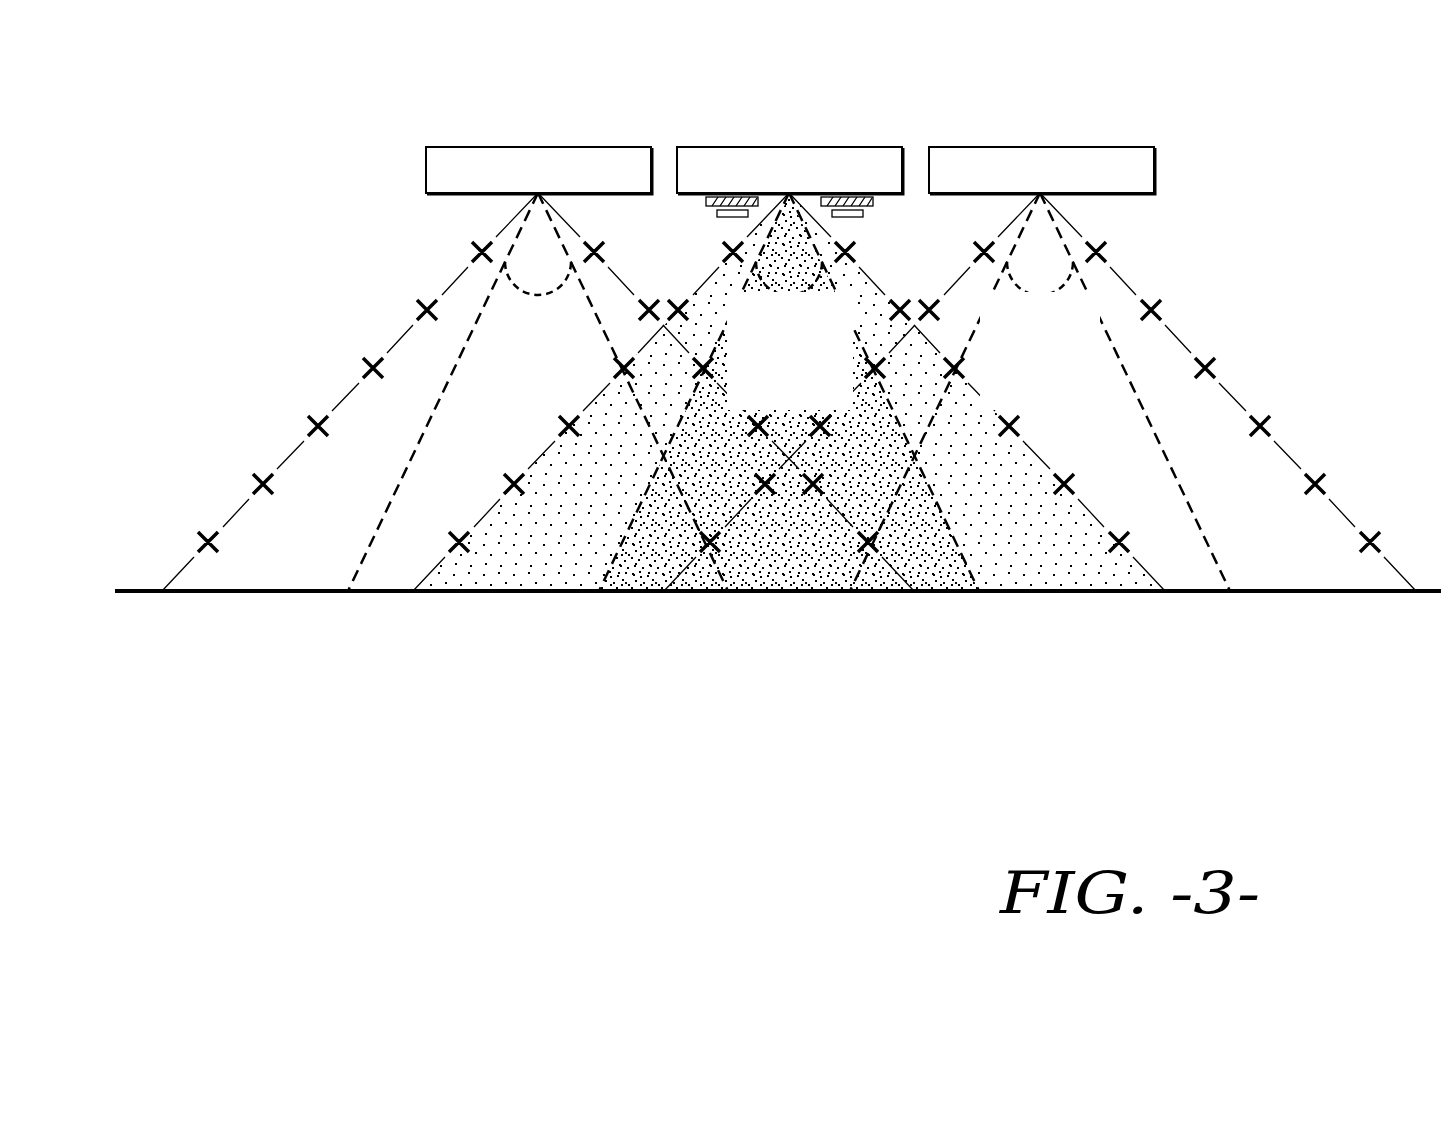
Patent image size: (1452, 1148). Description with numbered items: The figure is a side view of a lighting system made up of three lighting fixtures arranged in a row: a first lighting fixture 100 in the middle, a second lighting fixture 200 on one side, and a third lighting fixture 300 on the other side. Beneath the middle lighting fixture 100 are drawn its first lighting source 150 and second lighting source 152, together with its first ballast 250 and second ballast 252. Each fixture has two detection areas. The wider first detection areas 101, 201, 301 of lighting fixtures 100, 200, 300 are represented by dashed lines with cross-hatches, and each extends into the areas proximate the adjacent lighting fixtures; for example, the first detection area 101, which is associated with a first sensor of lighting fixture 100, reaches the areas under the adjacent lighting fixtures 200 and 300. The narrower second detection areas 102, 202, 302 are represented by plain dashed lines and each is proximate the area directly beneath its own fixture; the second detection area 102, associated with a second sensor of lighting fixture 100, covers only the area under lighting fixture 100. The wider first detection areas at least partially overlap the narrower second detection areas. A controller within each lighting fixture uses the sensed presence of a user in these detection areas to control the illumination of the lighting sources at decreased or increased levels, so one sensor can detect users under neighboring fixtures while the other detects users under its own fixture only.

The first lighting fixture 100 is at (825, 147).
The second lighting fixture 200 is at (573, 147).
The third lighting fixture 300 is at (1075, 147).
The first detection area 101 is at (1167, 607).
The first detection area 201 is at (145, 594).
The first detection area 301 is at (665, 607).
The second detection area 102 is at (789, 392).
The second detection area 202 is at (538, 392).
The second detection area 302 is at (1040, 392).
The first lighting source 150 is at (718, 218).
The second lighting source 152 is at (861, 218).
The first ballast 250 is at (706, 207).
The second ballast 252 is at (872, 207).